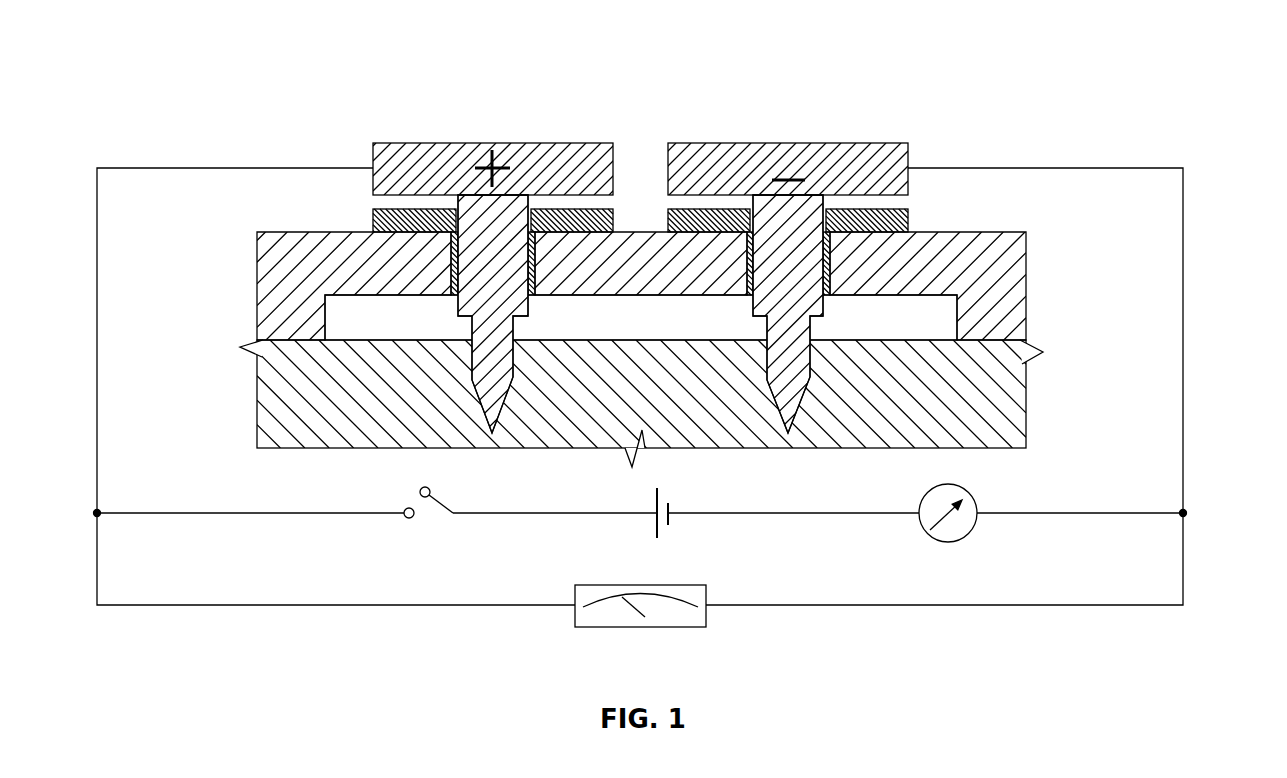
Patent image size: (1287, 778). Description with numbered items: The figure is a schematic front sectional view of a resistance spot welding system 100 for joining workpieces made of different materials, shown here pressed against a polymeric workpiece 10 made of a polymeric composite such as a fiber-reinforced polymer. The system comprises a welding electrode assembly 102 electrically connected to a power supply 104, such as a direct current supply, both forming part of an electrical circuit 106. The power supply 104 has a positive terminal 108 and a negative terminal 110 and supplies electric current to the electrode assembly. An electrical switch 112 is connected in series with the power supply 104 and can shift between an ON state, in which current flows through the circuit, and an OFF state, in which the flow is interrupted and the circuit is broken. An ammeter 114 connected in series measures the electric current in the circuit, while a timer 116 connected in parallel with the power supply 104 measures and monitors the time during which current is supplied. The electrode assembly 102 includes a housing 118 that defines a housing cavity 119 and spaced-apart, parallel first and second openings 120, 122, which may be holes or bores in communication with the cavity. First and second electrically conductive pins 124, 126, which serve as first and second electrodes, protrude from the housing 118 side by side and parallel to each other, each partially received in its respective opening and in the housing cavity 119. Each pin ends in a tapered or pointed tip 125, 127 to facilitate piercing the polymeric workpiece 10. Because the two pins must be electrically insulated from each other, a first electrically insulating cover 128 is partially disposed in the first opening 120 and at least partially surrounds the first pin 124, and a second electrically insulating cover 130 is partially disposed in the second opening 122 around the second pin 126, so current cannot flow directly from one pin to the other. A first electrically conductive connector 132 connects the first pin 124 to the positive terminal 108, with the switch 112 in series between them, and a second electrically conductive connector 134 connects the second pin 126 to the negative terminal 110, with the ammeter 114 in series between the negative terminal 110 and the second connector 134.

The polymeric workpiece 10 is at (1000, 397).
The resistance spot welding system 100 is at (113, 80).
The welding electrode assembly 102 is at (370, 106).
The power supply 104 is at (662, 538).
The electrical circuit 106 is at (1194, 491).
The positive terminal 108 is at (625, 514).
The negative terminal 110 is at (695, 514).
The electrical switch 112 is at (427, 520).
The ammeter 114 is at (948, 543).
The timer 116 is at (665, 628).
The housing 118 is at (1003, 268).
The housing cavity 119 is at (672, 300).
The first opening 120 is at (445, 258).
The second opening 122 is at (838, 258).
The first electrically conductive pin 124 is at (473, 298).
The tapered tip 125 is at (490, 385).
The second electrically conductive pin 126 is at (812, 298).
The tapered tip 127 is at (787, 385).
The first electrically insulating cover 128 is at (530, 253).
The second electrically insulating cover 130 is at (824, 252).
The first electrically conductive connector 132 is at (448, 162).
The second electrically conductive connector 134 is at (737, 162).